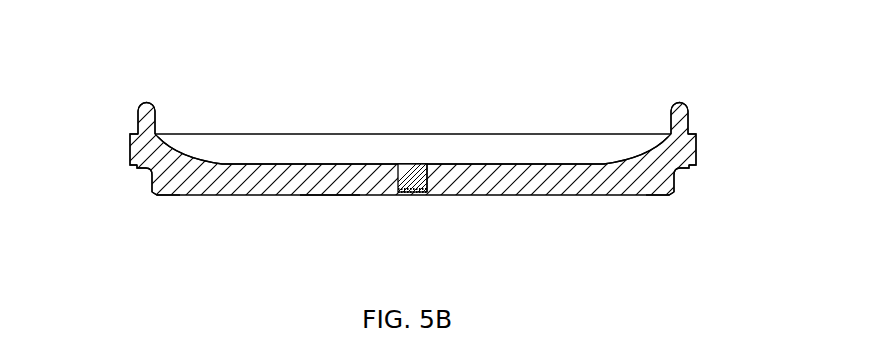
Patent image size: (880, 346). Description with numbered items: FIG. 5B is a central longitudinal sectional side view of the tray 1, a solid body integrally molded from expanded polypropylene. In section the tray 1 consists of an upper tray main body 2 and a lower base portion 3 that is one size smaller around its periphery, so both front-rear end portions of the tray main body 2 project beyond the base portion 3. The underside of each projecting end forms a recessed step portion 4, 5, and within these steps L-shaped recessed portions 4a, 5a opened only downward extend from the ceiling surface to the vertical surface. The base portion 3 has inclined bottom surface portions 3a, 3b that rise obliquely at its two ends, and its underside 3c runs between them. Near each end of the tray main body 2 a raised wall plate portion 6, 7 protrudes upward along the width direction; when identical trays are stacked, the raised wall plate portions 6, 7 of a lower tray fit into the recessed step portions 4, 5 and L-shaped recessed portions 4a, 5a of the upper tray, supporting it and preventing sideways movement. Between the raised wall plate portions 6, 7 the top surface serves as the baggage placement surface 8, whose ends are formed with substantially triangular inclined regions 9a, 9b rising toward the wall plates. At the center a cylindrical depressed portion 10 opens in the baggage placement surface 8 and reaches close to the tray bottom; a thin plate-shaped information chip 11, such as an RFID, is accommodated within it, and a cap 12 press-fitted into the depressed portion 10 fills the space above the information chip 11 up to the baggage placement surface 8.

The tray 1 is at (537, 127).
The tray main body 2 is at (129, 155).
The base portion 3 is at (527, 199).
The inclined bottom surface portion 3a is at (165, 196).
The inclined bottom surface portion 3b is at (663, 196).
The bottom plate underside 3c is at (332, 196).
The recessed step portion 4 is at (143, 181).
The L-shaped recessed portion 4a is at (137, 169).
The recessed step portion 5 is at (683, 183).
The L-shaped recessed portion 5a is at (684, 168).
The raised wall plate portion 6 is at (146, 103).
The raised wall plate portion 7 is at (680, 103).
The baggage placement surface 8 is at (478, 163).
The inclined region 9a is at (183, 156).
The inclined region 9b is at (638, 154).
The depressed portion 10 is at (429, 180).
The information chip 11 is at (410, 194).
The cap 12 is at (417, 163).